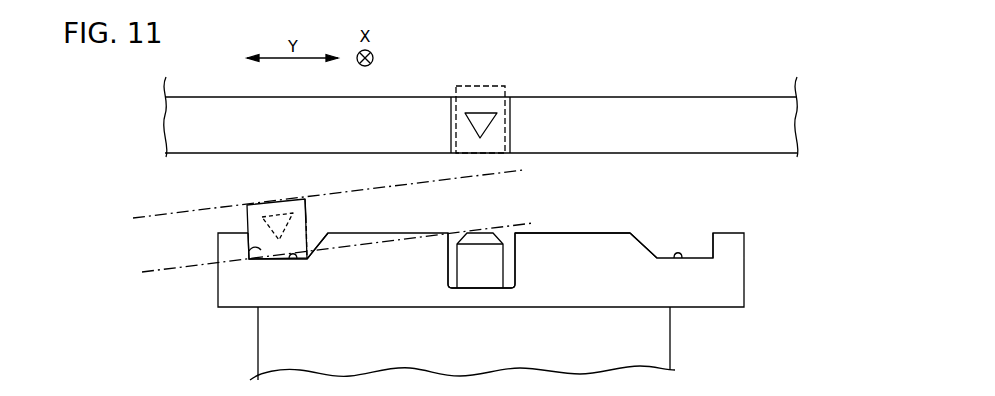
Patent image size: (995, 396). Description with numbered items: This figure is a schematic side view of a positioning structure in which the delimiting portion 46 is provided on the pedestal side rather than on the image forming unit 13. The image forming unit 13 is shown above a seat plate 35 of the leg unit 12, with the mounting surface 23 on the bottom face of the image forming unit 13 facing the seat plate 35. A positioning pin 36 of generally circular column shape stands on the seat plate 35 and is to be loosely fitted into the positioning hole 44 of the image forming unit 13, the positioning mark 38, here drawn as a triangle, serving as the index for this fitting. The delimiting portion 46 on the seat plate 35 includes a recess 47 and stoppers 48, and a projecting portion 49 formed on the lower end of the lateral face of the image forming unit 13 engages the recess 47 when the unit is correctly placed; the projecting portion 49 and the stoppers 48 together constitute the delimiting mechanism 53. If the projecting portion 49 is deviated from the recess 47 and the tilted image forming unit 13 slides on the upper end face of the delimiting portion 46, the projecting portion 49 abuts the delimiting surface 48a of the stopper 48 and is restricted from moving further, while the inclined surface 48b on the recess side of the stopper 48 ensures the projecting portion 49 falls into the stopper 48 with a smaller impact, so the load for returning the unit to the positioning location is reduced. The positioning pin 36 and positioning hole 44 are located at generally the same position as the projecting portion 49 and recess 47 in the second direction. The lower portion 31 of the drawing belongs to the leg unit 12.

The leg unit 12 is at (684, 352).
The image forming unit 13 is at (792, 165).
The mounting surface 23 is at (642, 153).
The base 31 is at (258, 335).
The seat plate 35 is at (744, 276).
The positioning pin 36 is at (457, 266).
The positioning mark 38 is at (478, 126).
The positioning hole 44 is at (483, 78).
The delimiting portion 46 is at (593, 233).
The recess 47 is at (503, 259).
The stopper 48 is at (289, 256).
The delimiting surface 48a is at (253, 247).
The inclined surface 48b is at (320, 246).
The projecting portion 49 is at (511, 123).
The delimiting mechanism 53 is at (277, 180).